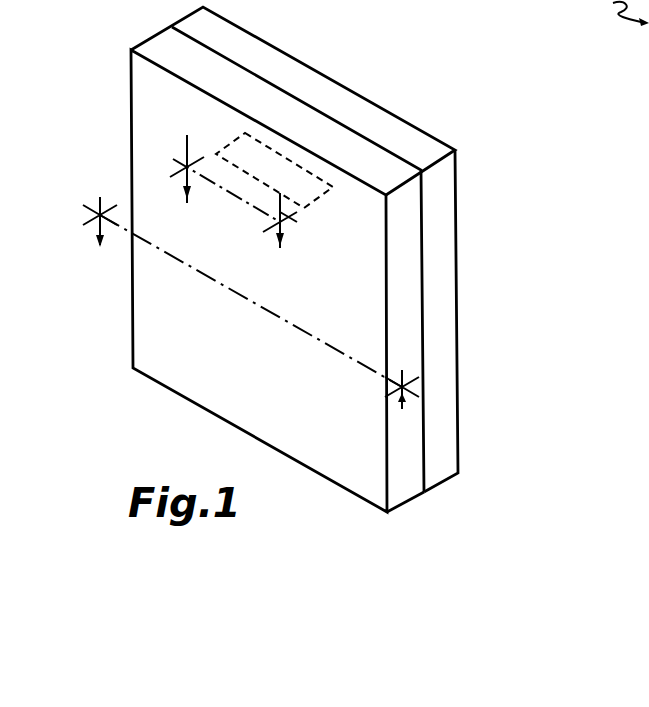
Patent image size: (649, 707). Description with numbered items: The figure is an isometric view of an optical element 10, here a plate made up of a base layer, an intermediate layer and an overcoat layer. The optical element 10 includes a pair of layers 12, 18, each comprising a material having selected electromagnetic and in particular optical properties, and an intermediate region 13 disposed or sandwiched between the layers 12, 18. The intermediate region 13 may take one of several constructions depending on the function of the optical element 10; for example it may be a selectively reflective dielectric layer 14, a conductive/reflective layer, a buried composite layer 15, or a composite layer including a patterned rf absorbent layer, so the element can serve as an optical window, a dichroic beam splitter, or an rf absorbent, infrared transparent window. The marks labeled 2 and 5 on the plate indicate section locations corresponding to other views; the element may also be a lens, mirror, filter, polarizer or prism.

The optical element 10 is at (129, 119).
The layer 12 is at (406, 486).
The intermediate region 13 is at (426, 285).
The selectively reflective dielectric layer 14 is at (534, 301).
The buried composite layer 15 is at (581, 276).
The layer 18 is at (440, 463).
The section indication for FIGS. 2,3,4 2 is at (247, 182).
The section indication for FIGS. 5,6 5 is at (251, 291).